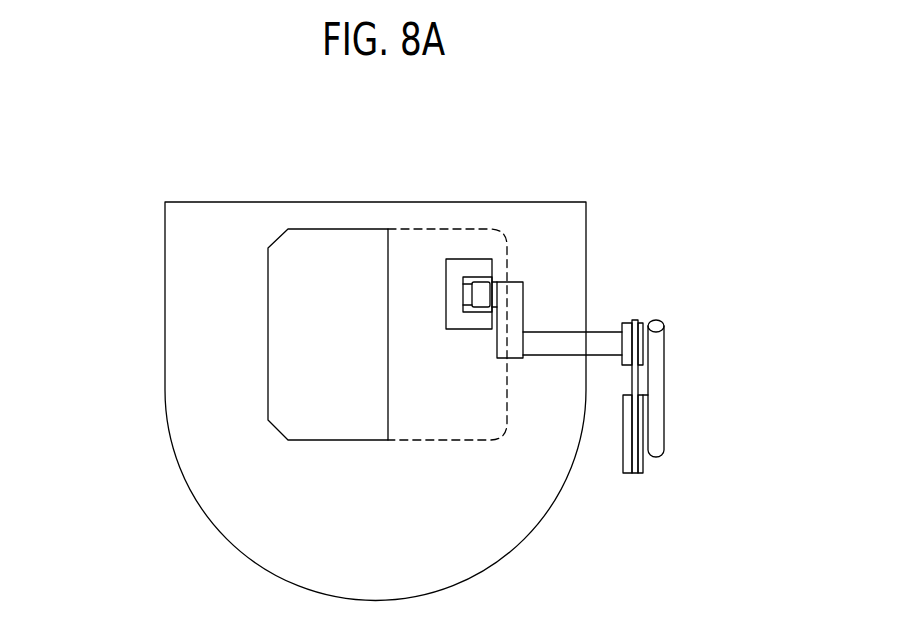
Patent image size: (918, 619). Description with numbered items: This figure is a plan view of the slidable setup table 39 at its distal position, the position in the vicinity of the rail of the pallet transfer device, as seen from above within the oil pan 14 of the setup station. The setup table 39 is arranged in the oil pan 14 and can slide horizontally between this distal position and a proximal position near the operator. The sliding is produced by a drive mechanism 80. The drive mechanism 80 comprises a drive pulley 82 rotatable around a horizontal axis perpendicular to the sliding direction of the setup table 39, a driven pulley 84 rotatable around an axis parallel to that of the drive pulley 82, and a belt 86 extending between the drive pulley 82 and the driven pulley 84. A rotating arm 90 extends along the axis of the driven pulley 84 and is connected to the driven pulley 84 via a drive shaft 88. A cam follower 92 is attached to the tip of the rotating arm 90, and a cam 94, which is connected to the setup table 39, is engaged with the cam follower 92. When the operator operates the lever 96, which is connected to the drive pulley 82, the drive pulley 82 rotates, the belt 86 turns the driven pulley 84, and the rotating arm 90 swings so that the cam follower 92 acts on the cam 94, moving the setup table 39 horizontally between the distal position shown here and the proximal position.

The oil pan 14 is at (190, 371).
The slidable setup table 39 is at (297, 286).
The drive mechanism 80 is at (728, 182).
The drive pulley 82 is at (642, 462).
The driven pulley 84 is at (640, 320).
The belt 86 is at (628, 430).
The drive shaft 88 is at (604, 343).
The rotating arm 90 is at (510, 313).
The cam follower 92 is at (482, 285).
The cam 94 is at (458, 268).
The lever 96 is at (657, 374).